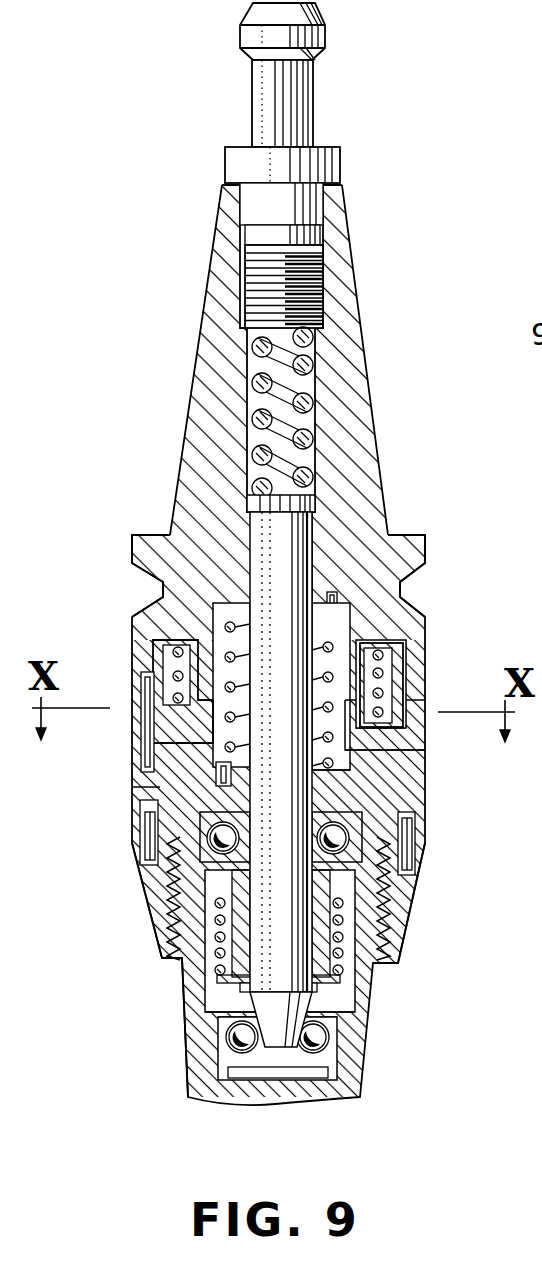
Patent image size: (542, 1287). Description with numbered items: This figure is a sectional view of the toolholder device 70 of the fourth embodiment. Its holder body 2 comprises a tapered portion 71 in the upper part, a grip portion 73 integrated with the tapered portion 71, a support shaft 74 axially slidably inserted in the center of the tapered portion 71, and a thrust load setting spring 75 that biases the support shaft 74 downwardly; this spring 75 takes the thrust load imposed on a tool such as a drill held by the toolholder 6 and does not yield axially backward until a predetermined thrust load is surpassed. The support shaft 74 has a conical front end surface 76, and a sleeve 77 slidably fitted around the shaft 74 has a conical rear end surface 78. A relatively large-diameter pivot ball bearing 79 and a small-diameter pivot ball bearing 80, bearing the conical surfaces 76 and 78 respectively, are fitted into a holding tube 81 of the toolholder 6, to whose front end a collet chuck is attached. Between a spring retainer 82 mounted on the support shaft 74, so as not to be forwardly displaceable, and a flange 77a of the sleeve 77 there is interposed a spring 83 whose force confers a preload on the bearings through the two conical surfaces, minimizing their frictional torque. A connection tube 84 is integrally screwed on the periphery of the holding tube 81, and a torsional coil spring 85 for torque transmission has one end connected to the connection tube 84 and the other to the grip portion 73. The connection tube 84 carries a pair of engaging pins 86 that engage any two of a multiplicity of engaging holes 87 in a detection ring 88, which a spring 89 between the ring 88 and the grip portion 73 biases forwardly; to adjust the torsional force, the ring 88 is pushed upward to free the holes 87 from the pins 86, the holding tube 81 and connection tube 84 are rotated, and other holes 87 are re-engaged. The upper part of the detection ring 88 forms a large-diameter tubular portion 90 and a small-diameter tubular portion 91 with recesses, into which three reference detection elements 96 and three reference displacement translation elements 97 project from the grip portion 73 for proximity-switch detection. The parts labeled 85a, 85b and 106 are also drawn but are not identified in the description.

The holder body 2 is at (388, 438).
The toolholder 6 is at (428, 875).
The toolholder device 70 is at (445, 842).
The tapered portion 71 is at (357, 325).
The grip portion 73 is at (425, 555).
The support shaft 74 is at (292, 543).
The thrust load setting spring 75 is at (288, 429).
The front end surface 76 is at (295, 1078).
The sleeve 77 is at (395, 945).
The flange 77a is at (385, 900).
The rear end surface 78 is at (168, 935).
The large-diameter pivot ball bearing 79 is at (232, 1038).
The small-diameter pivot ball bearing 80 is at (200, 856).
The holding tube 81 is at (352, 1058).
The spring retainer 82 is at (345, 990).
The spring 83 is at (372, 975).
The connection tube 84 is at (165, 910).
The torsional coil spring 85 is at (160, 748).
The pin 85a is at (217, 778).
The pin 85b is at (334, 594).
The engaging pins 86 is at (143, 842).
The engaging holes 87 is at (157, 804).
The detection ring 88 is at (417, 780).
The spring 89 is at (402, 730).
The large-diameter tubular portion 90 is at (405, 653).
The small-diameter tubular portion 91 is at (340, 670).
The reference detection elements 96 is at (175, 708).
The reference displacement translation elements 97 is at (213, 660).
The spring 106 is at (385, 698).